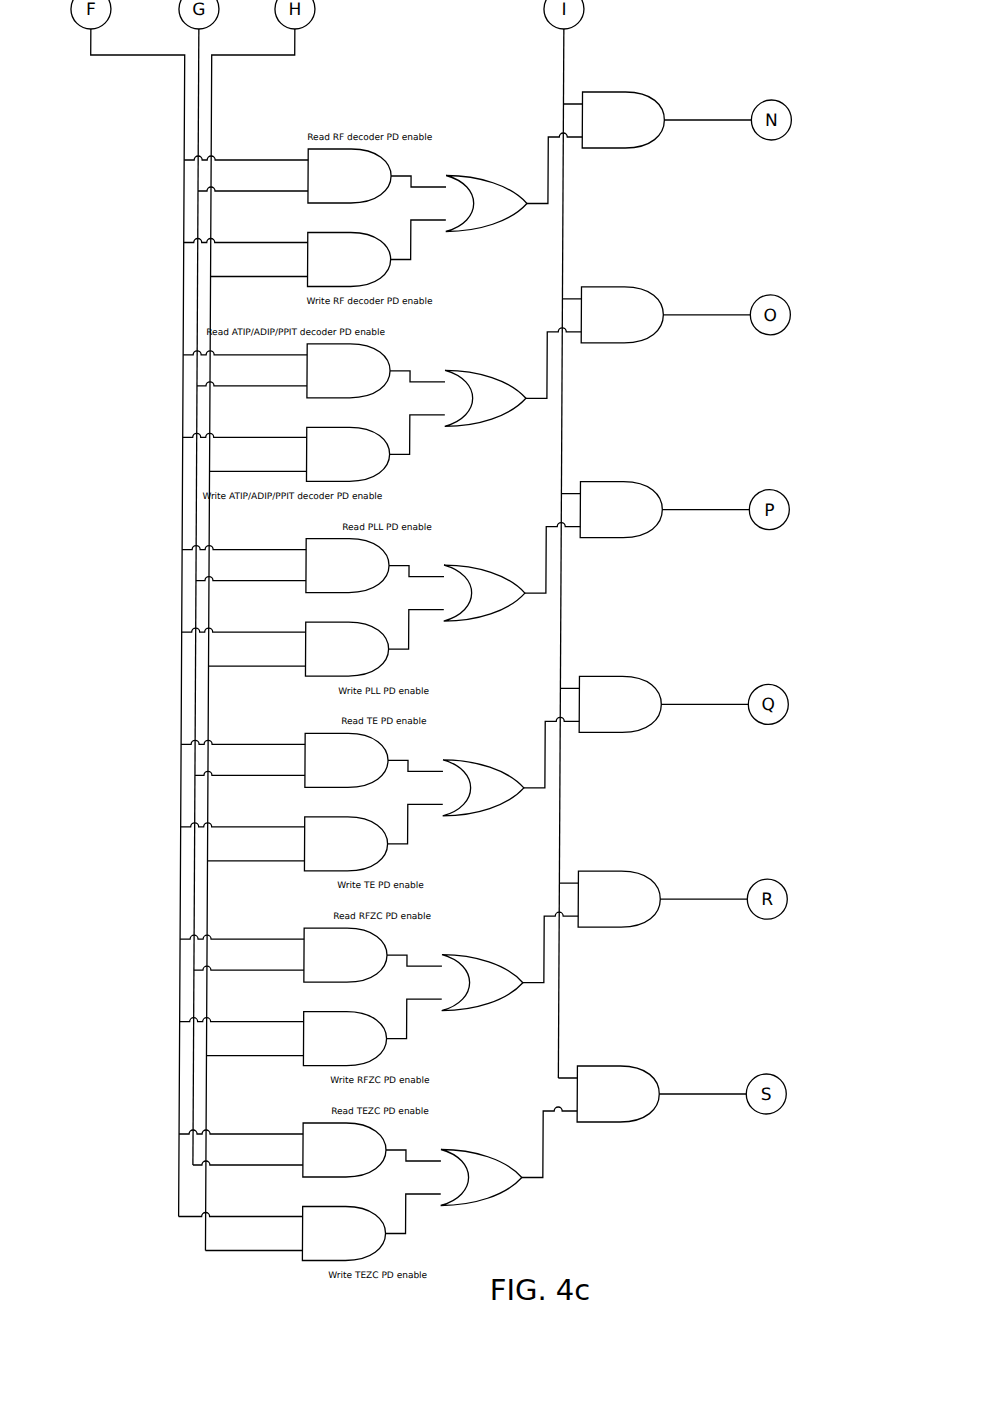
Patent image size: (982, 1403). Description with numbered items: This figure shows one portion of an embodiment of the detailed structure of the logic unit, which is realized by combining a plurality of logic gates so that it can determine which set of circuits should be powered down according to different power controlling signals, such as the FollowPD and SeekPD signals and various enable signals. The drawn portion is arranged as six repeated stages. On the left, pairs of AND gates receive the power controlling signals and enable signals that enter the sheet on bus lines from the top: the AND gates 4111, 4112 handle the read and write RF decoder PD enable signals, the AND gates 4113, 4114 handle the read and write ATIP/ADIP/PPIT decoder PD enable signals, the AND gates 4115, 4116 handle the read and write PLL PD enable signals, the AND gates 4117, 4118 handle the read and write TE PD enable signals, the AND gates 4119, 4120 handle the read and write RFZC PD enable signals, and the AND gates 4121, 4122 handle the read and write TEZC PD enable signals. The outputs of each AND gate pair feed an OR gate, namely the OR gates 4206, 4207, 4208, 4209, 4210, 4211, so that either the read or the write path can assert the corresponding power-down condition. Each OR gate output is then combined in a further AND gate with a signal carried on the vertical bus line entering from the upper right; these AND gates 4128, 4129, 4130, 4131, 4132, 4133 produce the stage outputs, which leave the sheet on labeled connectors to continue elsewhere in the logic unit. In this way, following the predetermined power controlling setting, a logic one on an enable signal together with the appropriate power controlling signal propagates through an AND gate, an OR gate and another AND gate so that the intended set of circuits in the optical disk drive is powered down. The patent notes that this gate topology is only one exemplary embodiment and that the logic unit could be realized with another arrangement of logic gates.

The read RF decoder PD enable AND gate 4111 is at (349, 176).
The write RF decoder PD enable AND gate 4112 is at (348, 260).
The read ATIP/ADIP/PPIT decoder PD enable AND gate 4113 is at (348, 371).
The write ATIP/ADIP/PPIT decoder PD enable AND gate 4114 is at (347, 454).
The read PLL PD enable AND gate 4115 is at (347, 566).
The write PLL PD enable AND gate 4116 is at (346, 649).
The read TE PD enable AND gate 4117 is at (346, 760).
The write TE PD enable AND gate 4118 is at (345, 844).
The read RFZC PD enable AND gate 4119 is at (345, 955).
The write RFZC PD enable AND gate 4120 is at (344, 1039).
The read TEZC PD enable AND gate 4121 is at (344, 1150).
The write TEZC PD enable AND gate 4122 is at (343, 1234).
The OR gate 4206 is at (486, 204).
The OR gate 4207 is at (485, 398).
The OR gate 4208 is at (484, 593).
The OR gate 4209 is at (483, 788).
The OR gate 4210 is at (482, 983).
The OR gate 4211 is at (481, 1178).
The output AND gate 4128 is at (623, 120).
The output AND gate 4129 is at (622, 315).
The output AND gate 4130 is at (621, 510).
The output AND gate 4131 is at (620, 704).
The output AND gate 4132 is at (619, 899).
The output AND gate 4133 is at (618, 1094).